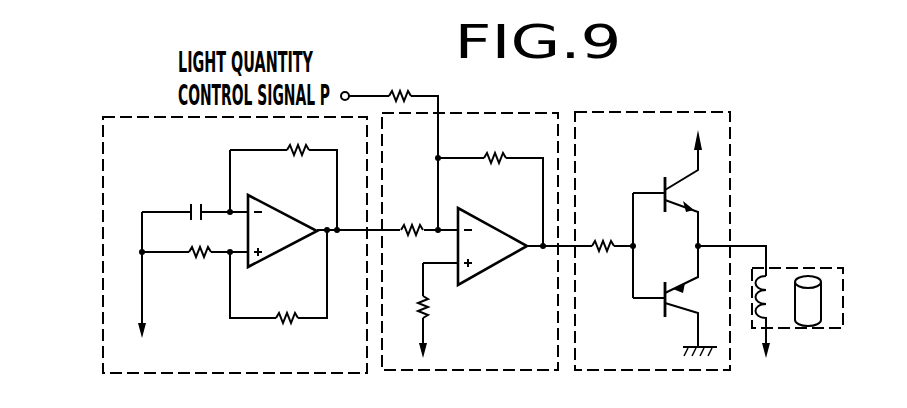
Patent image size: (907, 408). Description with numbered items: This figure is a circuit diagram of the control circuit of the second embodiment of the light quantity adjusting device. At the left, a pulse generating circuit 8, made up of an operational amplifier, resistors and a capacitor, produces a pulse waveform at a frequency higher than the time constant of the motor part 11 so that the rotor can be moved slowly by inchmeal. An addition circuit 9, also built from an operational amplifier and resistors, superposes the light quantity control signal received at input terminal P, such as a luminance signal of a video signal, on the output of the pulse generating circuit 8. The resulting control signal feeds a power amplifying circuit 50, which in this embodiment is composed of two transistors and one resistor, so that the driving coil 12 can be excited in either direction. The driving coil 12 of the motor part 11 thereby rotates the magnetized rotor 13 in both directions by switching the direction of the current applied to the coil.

The pulse generating circuit 8 is at (103, 148).
The addition circuit 9 is at (547, 113).
The power amplifying circuit 50 is at (718, 112).
The motor part 11 is at (844, 308).
The driving coil 12 is at (777, 290).
The rotor 13 is at (824, 290).